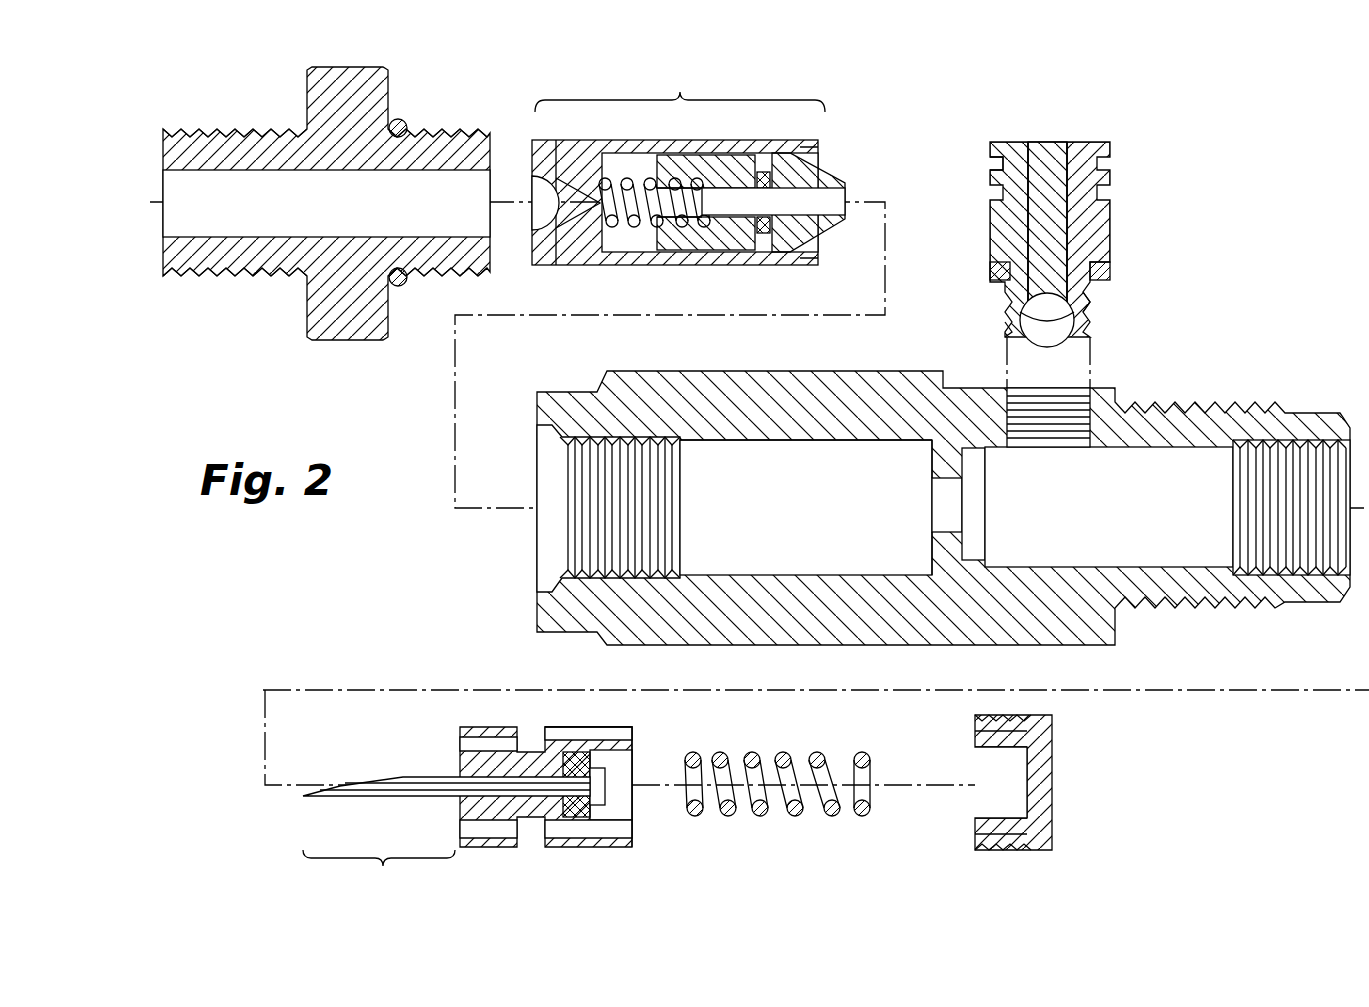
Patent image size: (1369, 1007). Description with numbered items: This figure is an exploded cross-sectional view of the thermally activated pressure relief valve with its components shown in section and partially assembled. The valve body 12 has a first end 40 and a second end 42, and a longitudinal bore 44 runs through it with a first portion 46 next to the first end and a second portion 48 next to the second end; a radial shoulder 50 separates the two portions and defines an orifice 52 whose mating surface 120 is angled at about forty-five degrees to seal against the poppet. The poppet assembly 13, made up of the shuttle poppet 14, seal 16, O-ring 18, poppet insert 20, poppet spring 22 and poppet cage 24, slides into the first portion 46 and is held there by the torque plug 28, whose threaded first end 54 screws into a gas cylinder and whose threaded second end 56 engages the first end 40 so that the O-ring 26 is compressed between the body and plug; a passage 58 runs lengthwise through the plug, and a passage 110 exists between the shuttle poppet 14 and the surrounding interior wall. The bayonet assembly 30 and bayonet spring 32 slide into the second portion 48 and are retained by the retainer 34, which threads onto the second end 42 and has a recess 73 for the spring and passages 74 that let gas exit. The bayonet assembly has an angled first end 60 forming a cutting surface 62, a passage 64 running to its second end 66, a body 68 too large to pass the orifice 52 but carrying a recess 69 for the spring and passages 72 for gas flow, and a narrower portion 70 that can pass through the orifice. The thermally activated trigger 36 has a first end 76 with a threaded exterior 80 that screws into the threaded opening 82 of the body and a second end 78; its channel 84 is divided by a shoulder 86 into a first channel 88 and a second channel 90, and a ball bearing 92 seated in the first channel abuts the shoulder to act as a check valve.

The valve body 12 is at (722, 368).
The poppet assembly 13 is at (680, 85).
The shuttle poppet 14 is at (826, 166).
The seal 16 is at (790, 180).
The O-ring 18 is at (765, 172).
The poppet insert 20 is at (722, 170).
The poppet spring 22 is at (625, 178).
The poppet cage 24 is at (604, 145).
The O-ring 26 is at (400, 286).
The torque plug 28 is at (360, 67).
The bayonet assembly 30 is at (480, 848).
The bayonet spring 32 is at (700, 816).
The retainer 34 is at (1037, 787).
The thermally activated trigger 36 is at (985, 243).
The first end 40 is at (537, 610).
The second end 42 is at (1342, 413).
The longitudinal bore 44 is at (800, 452).
The first portion 46 is at (737, 544).
The second portion 48 is at (1078, 534).
The radial shoulder 50 is at (932, 550).
The orifice 52 is at (985, 500).
The threaded first end 54 is at (232, 128).
The threaded second end 56 is at (453, 130).
The passage 58 is at (340, 229).
The first end 60 is at (431, 790).
The cutting surface 62 is at (360, 782).
The passage 64 is at (408, 778).
The second end 66 is at (632, 745).
The body 68 is at (552, 820).
The recess 69 is at (645, 811).
The portion 70 is at (379, 872).
The passages 72 is at (498, 730).
The recess 73 is at (982, 811).
The passages 74 is at (1035, 728).
The first end 76 is at (1012, 337).
The second end 78 is at (1000, 142).
The threaded exterior 80 is at (1005, 300).
The threaded opening 82 is at (1088, 400).
The channel 84 is at (1048, 142).
The shoulder 86 is at (1082, 296).
The first channel 88 is at (1088, 312).
The second channel 90 is at (1060, 215).
The ball bearing 92 is at (1035, 333).
The passage 110 is at (680, 160).
The mating surface 120 is at (932, 487).